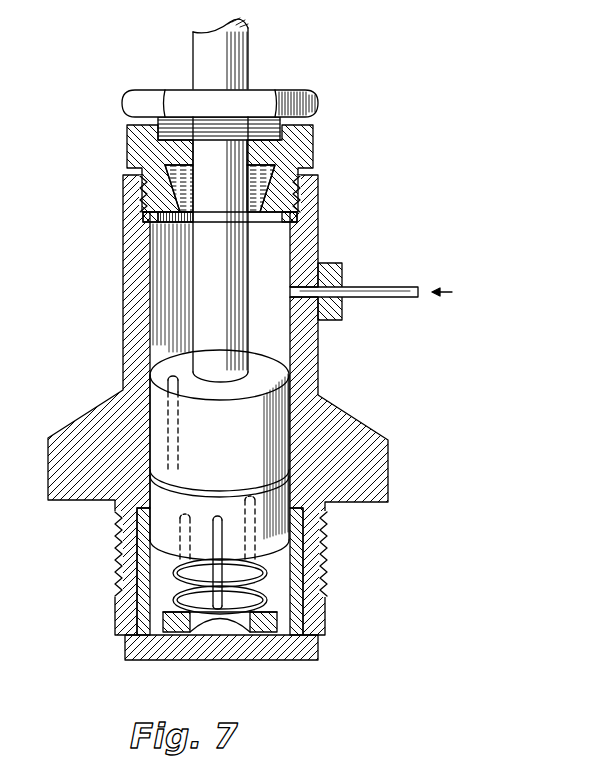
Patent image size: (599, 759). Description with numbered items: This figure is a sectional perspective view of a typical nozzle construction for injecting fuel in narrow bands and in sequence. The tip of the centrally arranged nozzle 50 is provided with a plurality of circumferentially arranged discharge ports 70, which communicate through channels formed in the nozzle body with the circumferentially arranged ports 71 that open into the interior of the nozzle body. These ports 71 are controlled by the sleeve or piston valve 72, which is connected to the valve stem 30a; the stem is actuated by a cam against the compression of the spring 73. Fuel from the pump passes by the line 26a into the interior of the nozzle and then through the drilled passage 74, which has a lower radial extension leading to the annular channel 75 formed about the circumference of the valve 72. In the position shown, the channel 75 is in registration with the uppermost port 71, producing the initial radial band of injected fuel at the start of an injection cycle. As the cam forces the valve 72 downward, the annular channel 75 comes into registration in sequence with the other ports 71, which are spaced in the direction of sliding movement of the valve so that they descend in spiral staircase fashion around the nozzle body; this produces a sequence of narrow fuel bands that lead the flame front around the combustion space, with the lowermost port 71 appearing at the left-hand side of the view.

The nozzle 50 is at (357, 502).
The valve stem 30a is at (250, 56).
The fuel line 26a is at (402, 270).
The sleeve or piston valve 72 is at (280, 405).
The annular channel 75 is at (188, 484).
The drilled passage 74 is at (168, 402).
The ports 71 is at (290, 471).
The spring 73 is at (192, 625).
The discharge ports 70 is at (137, 643).